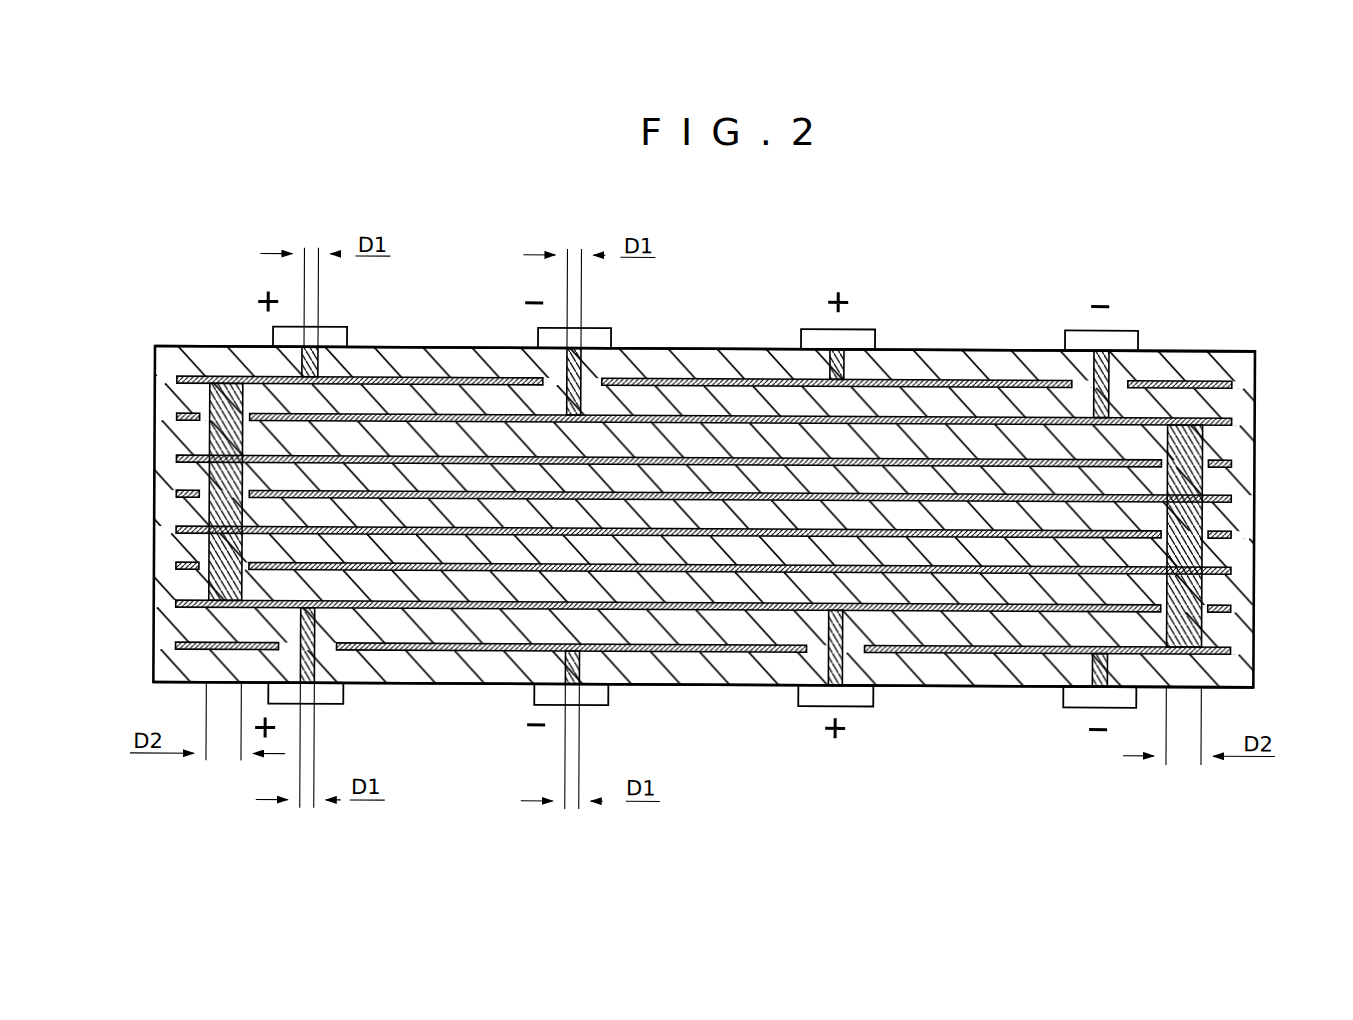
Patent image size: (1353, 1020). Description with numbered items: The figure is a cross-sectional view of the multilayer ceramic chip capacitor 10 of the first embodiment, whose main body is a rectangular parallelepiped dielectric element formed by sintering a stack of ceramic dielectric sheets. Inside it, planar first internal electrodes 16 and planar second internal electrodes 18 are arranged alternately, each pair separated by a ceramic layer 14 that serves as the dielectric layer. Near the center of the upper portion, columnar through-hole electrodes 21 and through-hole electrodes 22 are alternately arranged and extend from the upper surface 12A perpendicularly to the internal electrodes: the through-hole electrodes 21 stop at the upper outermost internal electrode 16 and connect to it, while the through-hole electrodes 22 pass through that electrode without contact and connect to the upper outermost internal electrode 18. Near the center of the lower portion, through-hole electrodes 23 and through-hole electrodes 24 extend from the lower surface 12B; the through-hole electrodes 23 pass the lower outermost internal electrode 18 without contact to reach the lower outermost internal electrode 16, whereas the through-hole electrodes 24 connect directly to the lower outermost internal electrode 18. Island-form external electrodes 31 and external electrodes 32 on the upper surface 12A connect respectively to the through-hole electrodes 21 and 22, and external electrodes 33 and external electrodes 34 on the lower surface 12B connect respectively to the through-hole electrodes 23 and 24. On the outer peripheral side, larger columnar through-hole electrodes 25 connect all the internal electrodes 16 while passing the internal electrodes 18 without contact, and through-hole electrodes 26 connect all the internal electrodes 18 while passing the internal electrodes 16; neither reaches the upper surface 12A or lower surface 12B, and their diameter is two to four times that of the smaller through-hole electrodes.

The multilayer ceramic chip capacitor 10 is at (1236, 276).
The upper surface 12A is at (1223, 346).
The lower surface 12B is at (687, 682).
The ceramic layer 14 is at (268, 398).
The internal electrode 16 is at (1232, 380).
The internal electrode 18 is at (1232, 417).
The through-hole electrode 21 is at (318, 368).
The through-hole electrode 22 is at (581, 368).
The through-hole electrode 23 is at (316, 665).
The through-hole electrode 24 is at (567, 668).
The through-hole electrode 25 is at (228, 433).
The through-hole electrode 26 is at (1200, 509).
The external electrode 31 is at (332, 326).
The external electrode 32 is at (597, 326).
The external electrode 33 is at (330, 703).
The external electrode 34 is at (597, 703).